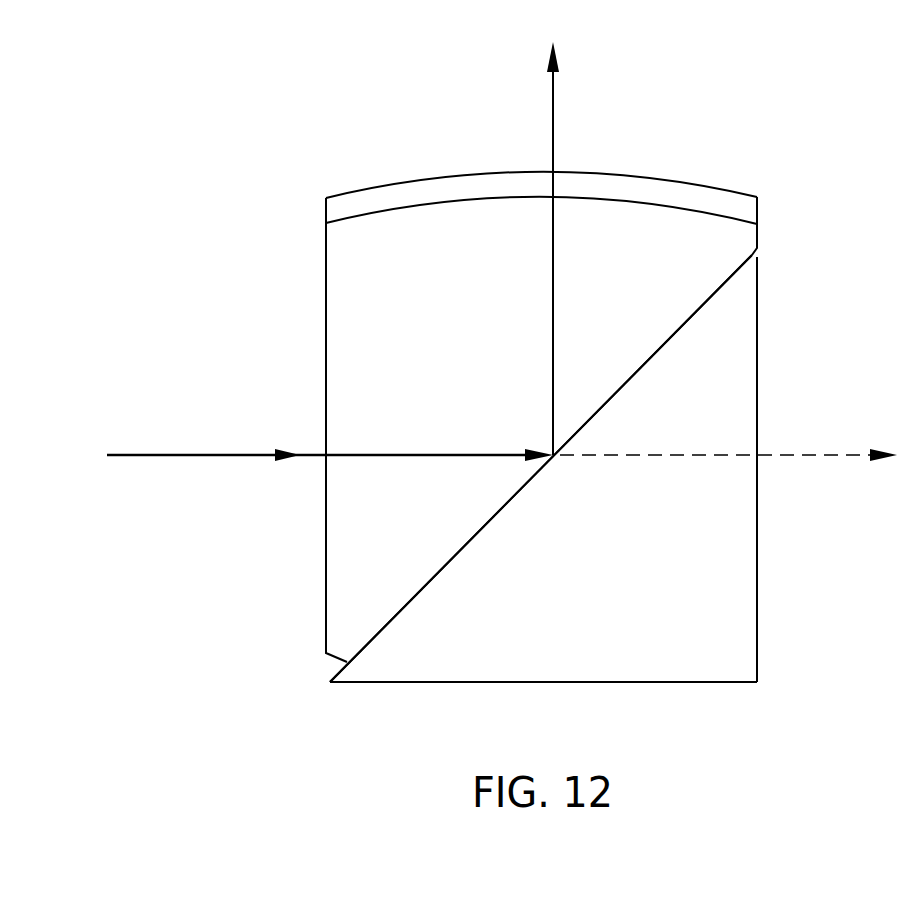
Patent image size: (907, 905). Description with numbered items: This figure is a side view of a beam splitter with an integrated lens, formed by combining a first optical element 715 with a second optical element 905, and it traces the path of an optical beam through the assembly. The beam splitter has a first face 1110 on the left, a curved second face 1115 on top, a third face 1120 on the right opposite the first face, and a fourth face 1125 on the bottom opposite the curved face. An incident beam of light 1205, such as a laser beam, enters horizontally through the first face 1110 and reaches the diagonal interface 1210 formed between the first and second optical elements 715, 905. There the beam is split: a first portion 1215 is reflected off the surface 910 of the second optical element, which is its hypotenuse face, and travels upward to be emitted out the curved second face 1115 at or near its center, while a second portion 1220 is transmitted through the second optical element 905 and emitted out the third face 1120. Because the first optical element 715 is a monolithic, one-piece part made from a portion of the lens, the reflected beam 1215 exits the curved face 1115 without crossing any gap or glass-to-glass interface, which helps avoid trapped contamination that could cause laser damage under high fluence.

The first optical element 715 is at (504, 362).
The second optical element 905 is at (643, 538).
The surface of the second optical element 910 is at (425, 584).
The first face 1110 is at (326, 348).
The curved second face 1115 is at (650, 177).
The third face 1120 is at (757, 553).
The fourth face 1125 is at (568, 686).
The beam of light 1205 is at (170, 458).
The interface 1210 is at (665, 343).
The first portion of the beam 1215 is at (555, 297).
The second portion of the beam 1220 is at (806, 455).